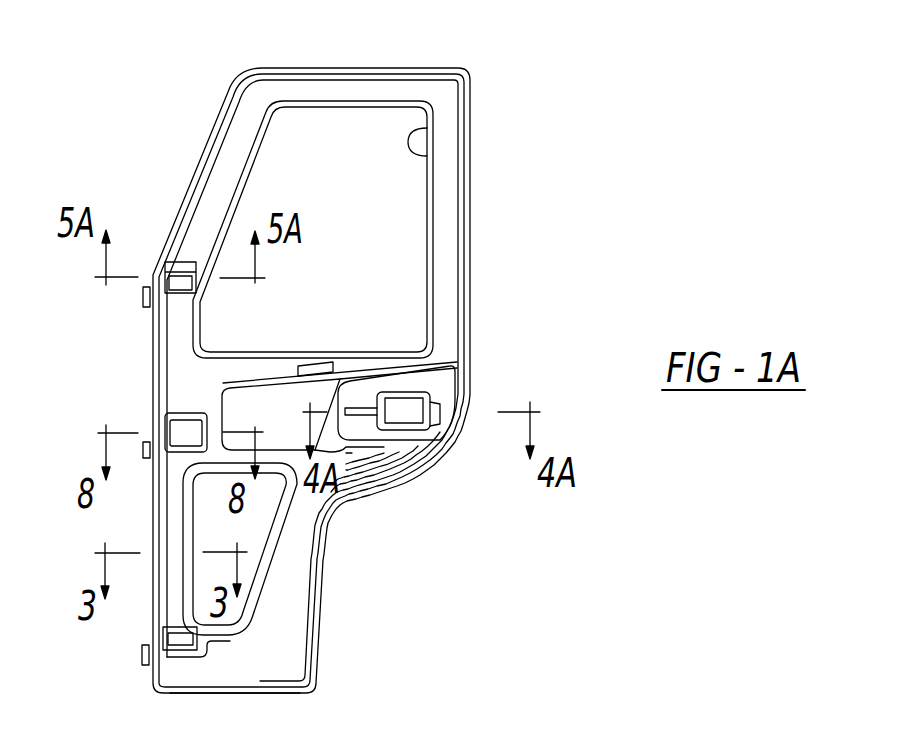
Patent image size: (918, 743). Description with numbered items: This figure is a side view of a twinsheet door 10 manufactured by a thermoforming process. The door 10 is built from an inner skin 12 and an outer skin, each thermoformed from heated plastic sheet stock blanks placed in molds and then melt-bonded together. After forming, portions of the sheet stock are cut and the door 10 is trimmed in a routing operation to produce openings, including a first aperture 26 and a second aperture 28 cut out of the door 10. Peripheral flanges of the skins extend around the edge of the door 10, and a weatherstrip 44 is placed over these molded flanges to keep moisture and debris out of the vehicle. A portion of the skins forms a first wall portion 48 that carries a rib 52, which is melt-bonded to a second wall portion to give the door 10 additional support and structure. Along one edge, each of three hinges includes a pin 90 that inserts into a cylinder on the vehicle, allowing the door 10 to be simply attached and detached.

The door 10 is at (155, 112).
The inner skin 12 is at (395, 91).
The first aperture 26 is at (420, 157).
The rib 52 is at (256, 394).
The first wall portion 48 is at (243, 412).
The pin 90 is at (145, 289).
The second aperture 28 is at (268, 517).
The weatherstrip 44 is at (237, 693).